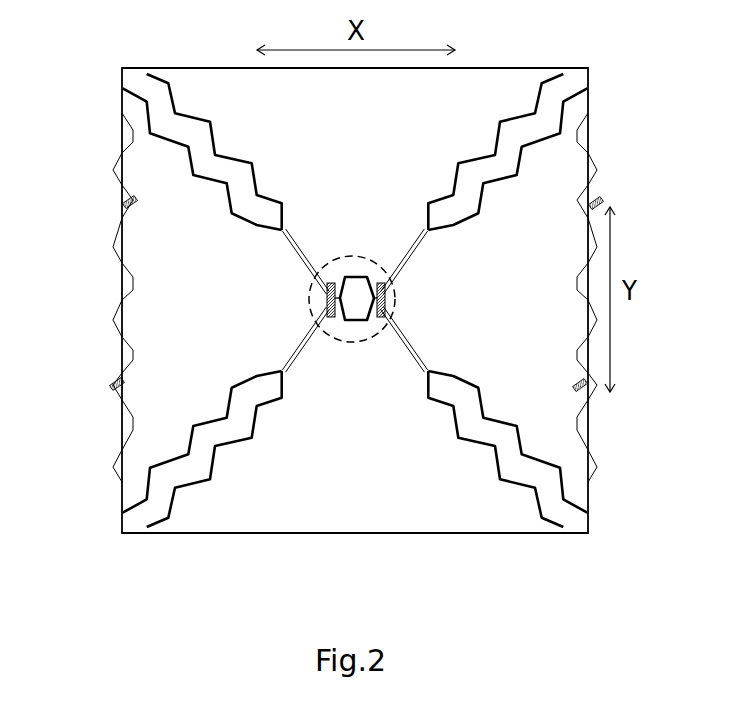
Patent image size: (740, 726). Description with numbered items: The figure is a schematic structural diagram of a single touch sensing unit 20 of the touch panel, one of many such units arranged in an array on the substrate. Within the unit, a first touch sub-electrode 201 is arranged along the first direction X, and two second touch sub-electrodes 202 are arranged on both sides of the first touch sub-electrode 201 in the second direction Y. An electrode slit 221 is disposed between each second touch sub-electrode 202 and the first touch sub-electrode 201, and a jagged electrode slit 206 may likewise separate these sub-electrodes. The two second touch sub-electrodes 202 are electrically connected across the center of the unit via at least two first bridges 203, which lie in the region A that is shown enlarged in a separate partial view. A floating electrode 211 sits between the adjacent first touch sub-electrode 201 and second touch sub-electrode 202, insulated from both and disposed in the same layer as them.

The touch sensing unit 20 is at (79, 44).
The first touch sub-electrode 201 is at (155, 312).
The second touch sub-electrode 202 is at (213, 83).
The electrode slit 221 is at (290, 237).
The floating electrode 211 is at (155, 508).
The jagged electrode slit 206 is at (403, 347).
The first bridge 203 is at (388, 300).
The region A is at (357, 330).